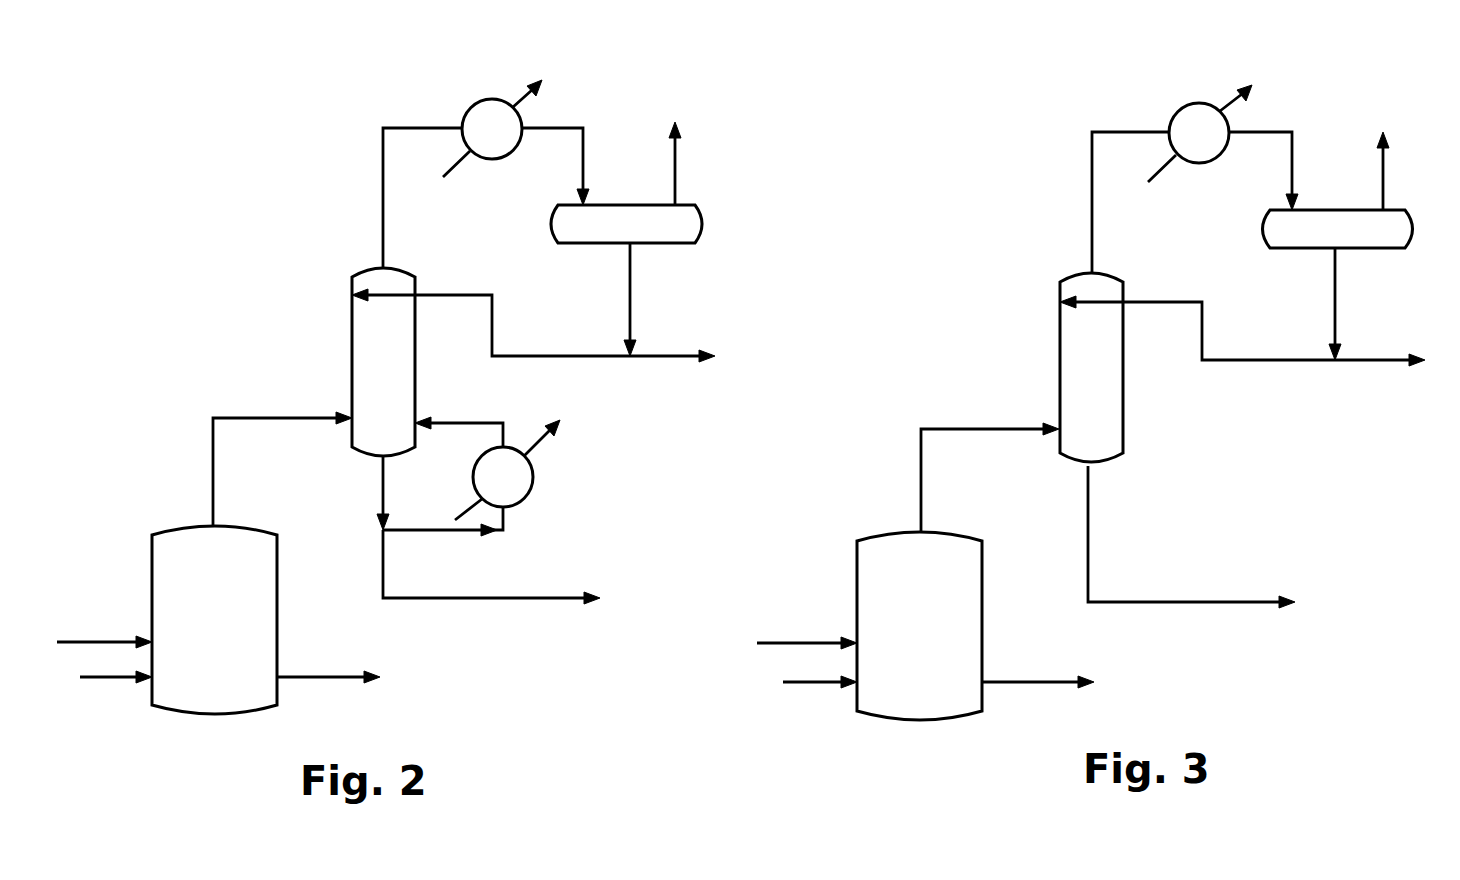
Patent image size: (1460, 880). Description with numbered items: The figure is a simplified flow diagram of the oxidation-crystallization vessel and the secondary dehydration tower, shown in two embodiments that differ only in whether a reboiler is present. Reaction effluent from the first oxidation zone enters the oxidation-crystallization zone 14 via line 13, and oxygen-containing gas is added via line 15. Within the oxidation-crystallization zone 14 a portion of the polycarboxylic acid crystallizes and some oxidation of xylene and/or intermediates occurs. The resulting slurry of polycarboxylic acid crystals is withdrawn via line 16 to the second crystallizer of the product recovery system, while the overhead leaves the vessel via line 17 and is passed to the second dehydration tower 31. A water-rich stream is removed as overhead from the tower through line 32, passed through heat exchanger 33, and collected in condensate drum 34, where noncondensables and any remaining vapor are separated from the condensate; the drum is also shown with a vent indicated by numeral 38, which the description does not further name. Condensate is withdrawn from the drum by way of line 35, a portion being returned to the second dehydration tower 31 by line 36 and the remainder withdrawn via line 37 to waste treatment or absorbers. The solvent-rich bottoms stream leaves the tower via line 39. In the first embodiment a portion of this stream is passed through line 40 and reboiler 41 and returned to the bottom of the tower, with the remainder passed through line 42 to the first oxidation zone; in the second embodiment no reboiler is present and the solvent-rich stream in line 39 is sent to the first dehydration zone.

In FIG. 2, the line 13 is at (100, 640).
In FIG. 3, the line 13 is at (785, 640).
In FIG. 2, the oxidation-crystallization zone 14 is at (277, 570).
In FIG. 3, the oxidation-crystallization zone 14 is at (970, 602).
In FIG. 2, the line 15 is at (118, 678).
In FIG. 3, the line 15 is at (820, 685).
In FIG. 2, the line 16 is at (328, 678).
In FIG. 3, the line 16 is at (1030, 683).
In FIG. 2, the line 17 is at (213, 460).
In FIG. 3, the line 17 is at (921, 470).
In FIG. 2, the second dehydration tower 31 is at (362, 300).
In FIG. 3, the second dehydration tower 31 is at (1075, 345).
In FIG. 2, the line 32 is at (383, 210).
In FIG. 3, the line 32 is at (1092, 198).
In FIG. 2, the heat exchanger 33 is at (488, 117).
In FIG. 3, the heat exchanger 33 is at (1190, 122).
In FIG. 2, the condensate drum 34 is at (690, 223).
In FIG. 3, the condensate drum 34 is at (1377, 240).
In FIG. 2, the line 35 is at (632, 282).
In FIG. 3, the line 35 is at (1340, 325).
In FIG. 2, the line 36 is at (590, 357).
In FIG. 3, the line 36 is at (1253, 362).
In FIG. 2, the line 37 is at (660, 358).
In FIG. 3, the line 37 is at (1355, 362).
In FIG. 2, the vent line 38 is at (685, 160).
In FIG. 3, the vent line 38 is at (1387, 172).
In FIG. 2, the line 39 is at (380, 485).
In FIG. 3, the line 39 is at (1088, 515).
In FIG. 2, the line 40 is at (465, 532).
In FIG. 2, the reboiler 41 is at (535, 488).
In FIG. 2, the line 42 is at (515, 600).